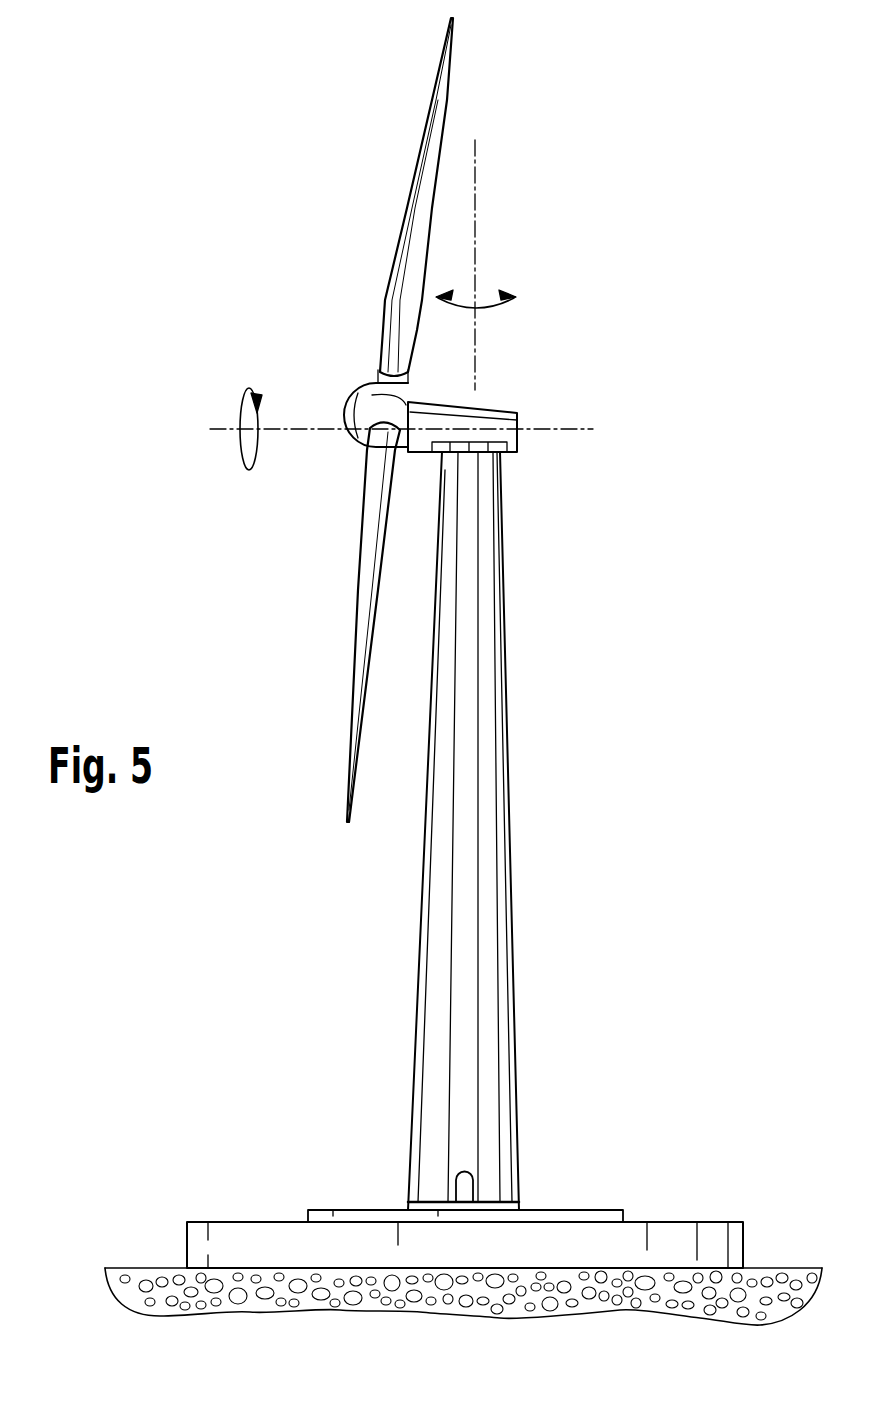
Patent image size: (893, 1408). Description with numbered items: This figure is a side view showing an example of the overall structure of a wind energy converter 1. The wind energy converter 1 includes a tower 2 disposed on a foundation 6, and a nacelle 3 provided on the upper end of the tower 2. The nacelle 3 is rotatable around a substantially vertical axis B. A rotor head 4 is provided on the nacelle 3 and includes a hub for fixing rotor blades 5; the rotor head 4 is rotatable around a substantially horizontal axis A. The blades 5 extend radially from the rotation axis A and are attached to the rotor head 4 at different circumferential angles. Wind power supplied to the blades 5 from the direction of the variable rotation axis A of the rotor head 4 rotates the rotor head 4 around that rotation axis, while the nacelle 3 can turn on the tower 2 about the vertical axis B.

The wind energy converter 1 is at (168, 178).
The tower 2 is at (472, 832).
The nacelle 3 is at (505, 380).
The rotor head 4 is at (362, 406).
The rotor blades 5 is at (422, 210).
The foundation 6 is at (668, 1240).
The horizontal axis A is at (578, 427).
The vertical axis B is at (478, 203).